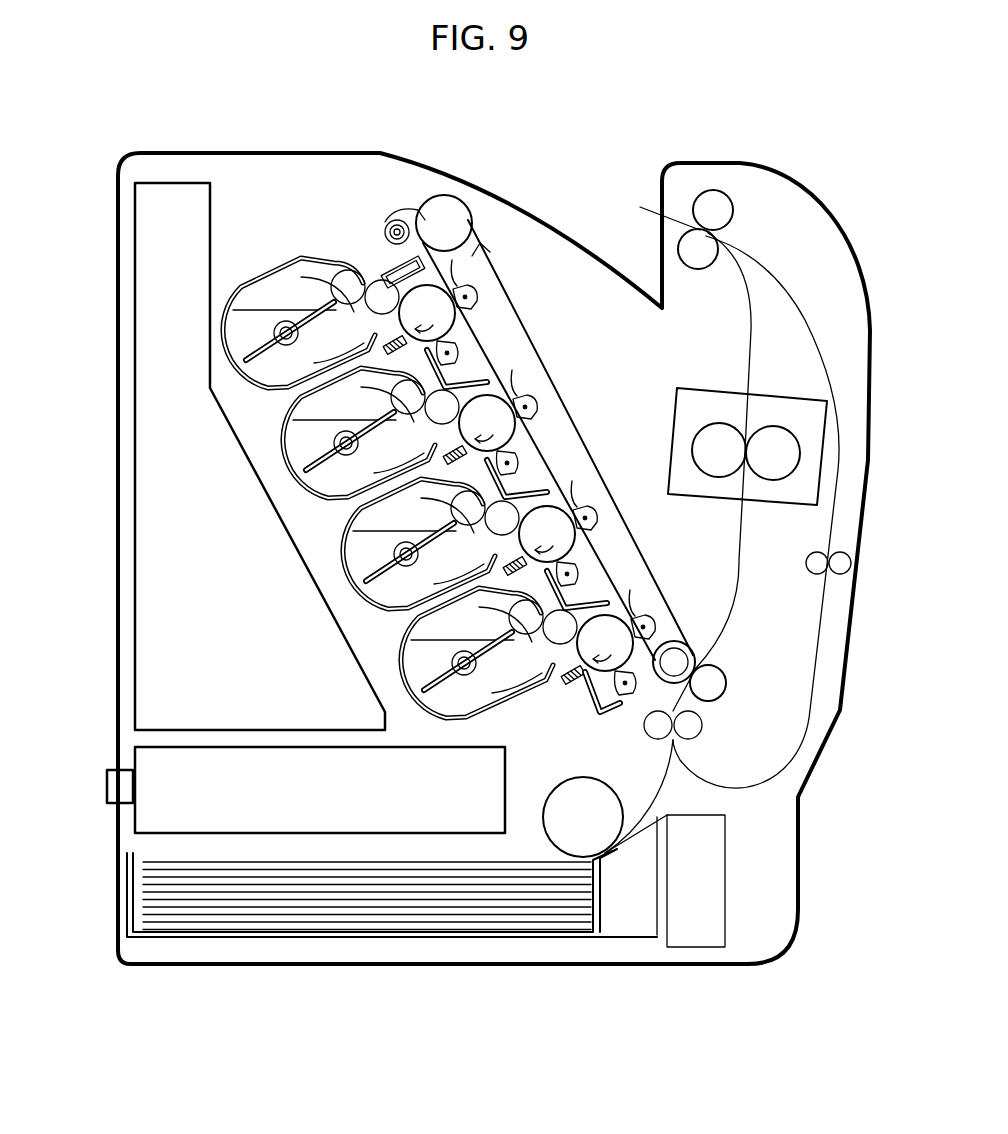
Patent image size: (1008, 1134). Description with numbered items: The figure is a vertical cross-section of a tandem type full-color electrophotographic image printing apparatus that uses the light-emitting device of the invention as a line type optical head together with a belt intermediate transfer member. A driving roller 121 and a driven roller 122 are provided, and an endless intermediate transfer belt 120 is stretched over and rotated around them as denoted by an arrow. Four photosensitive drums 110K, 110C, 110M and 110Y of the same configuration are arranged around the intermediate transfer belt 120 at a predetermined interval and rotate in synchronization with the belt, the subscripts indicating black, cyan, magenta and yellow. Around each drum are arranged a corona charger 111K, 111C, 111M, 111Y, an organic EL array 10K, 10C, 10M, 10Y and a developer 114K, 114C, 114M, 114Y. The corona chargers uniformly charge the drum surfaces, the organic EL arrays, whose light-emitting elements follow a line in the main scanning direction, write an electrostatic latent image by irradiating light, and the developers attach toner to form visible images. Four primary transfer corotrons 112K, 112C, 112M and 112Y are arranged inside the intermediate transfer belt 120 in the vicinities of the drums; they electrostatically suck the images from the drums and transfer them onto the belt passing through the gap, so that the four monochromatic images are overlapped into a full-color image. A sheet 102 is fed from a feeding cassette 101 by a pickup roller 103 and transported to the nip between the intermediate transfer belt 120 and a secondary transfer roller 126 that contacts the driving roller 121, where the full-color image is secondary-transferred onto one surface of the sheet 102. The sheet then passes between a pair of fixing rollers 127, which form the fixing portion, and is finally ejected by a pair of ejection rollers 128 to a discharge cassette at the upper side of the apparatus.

The organic EL array 10Y is at (310, 397).
The organic EL array 10M is at (375, 512).
The organic EL array 10C is at (430, 620).
The organic EL array 10K is at (552, 682).
The photosensitive drum 110Y is at (476, 293).
The photosensitive drum 110M is at (513, 410).
The photosensitive drum 110C is at (573, 520).
The photosensitive drum 110K is at (640, 627).
The corona charger 111Y is at (458, 348).
The corona charger 111M is at (512, 459).
The corona charger 111C is at (573, 570).
The corona charger 111K is at (628, 690).
The primary transfer corotron 112Y is at (455, 300).
The primary transfer corotron 112M is at (515, 420).
The primary transfer corotron 112C is at (573, 525).
The primary transfer corotron 112K is at (630, 628).
The developer 114Y is at (375, 290).
The developer 114M is at (443, 407).
The developer 114C is at (503, 518).
The developer 114K is at (552, 645).
The intermediate transfer belt 120 is at (545, 360).
The driving roller 121 is at (692, 648).
The driven roller 122 is at (452, 213).
The secondary transfer roller 126 is at (718, 683).
The pair of fixing rollers 127 is at (782, 390).
The pair of ejection rollers 128 is at (712, 252).
The sheet feed cassette 101 is at (127, 853).
The sheet 102 is at (337, 935).
The pickup roller 103 is at (630, 775).